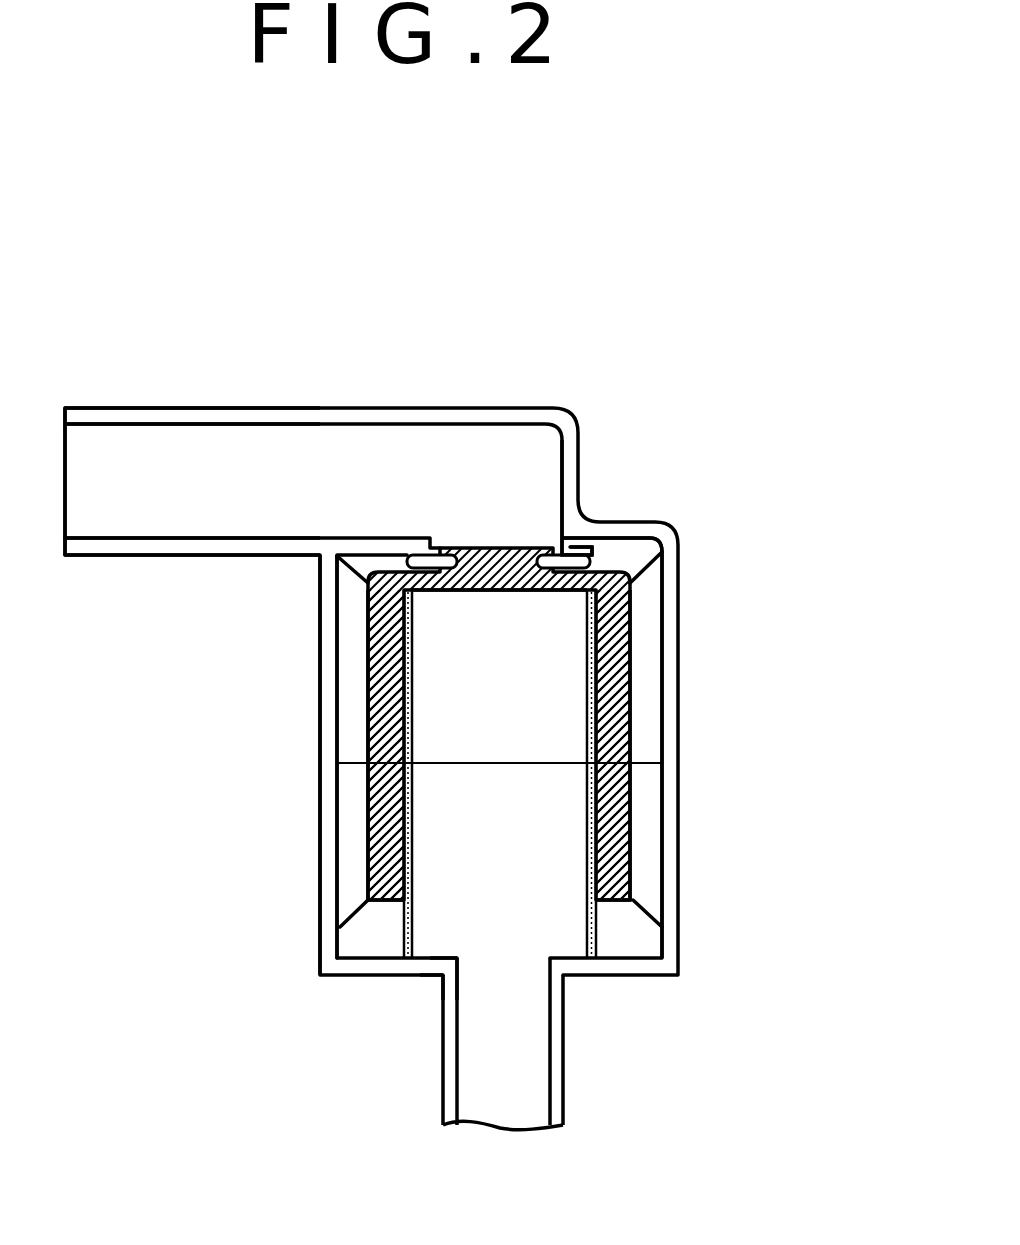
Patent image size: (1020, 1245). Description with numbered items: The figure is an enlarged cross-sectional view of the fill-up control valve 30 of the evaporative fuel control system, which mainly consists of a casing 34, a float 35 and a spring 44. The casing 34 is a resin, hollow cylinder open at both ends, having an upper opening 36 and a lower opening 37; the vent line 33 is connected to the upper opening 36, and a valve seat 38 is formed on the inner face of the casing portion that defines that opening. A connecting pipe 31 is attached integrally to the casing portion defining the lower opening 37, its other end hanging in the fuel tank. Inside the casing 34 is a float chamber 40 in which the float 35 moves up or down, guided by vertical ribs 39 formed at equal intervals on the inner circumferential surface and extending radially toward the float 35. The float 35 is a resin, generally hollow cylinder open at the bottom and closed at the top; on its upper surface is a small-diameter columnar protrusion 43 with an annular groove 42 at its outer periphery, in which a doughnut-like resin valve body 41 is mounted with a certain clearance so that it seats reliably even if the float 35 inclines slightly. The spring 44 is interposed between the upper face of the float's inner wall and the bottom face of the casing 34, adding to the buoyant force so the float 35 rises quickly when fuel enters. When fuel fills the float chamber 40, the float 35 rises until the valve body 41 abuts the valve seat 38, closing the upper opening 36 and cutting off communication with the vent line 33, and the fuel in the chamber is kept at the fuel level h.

The fill-up control valve 30 is at (701, 507).
The connecting pipe 31 is at (558, 1058).
The vent line 33 is at (185, 408).
The casing 34 is at (332, 860).
The float 35 is at (630, 785).
The upper opening 36 is at (451, 497).
The lower opening 37 is at (472, 962).
The valve seat 38 is at (560, 547).
The vertical ribs 39 is at (645, 680).
The float chamber 40 is at (440, 655).
The valve body 41 is at (600, 552).
The annular groove 42 is at (443, 550).
The columnar protrusion 43 is at (495, 548).
The spring 44 is at (630, 852).
The fuel level h is at (340, 763).